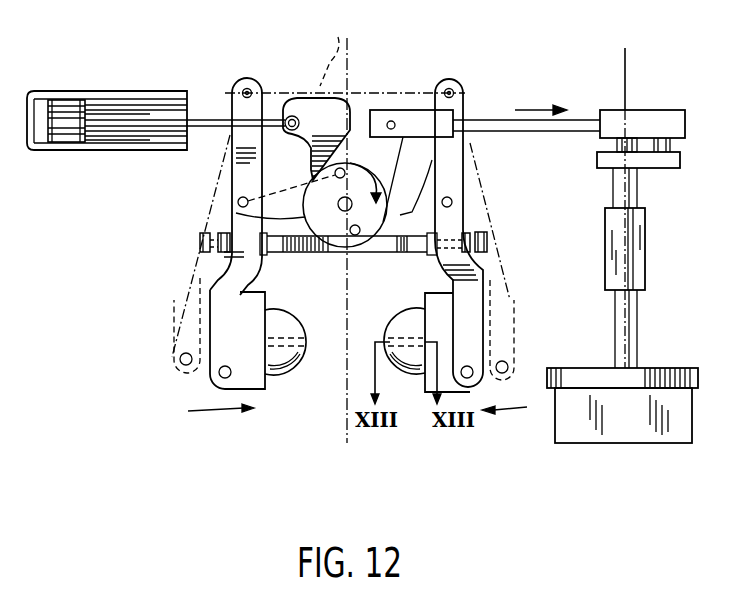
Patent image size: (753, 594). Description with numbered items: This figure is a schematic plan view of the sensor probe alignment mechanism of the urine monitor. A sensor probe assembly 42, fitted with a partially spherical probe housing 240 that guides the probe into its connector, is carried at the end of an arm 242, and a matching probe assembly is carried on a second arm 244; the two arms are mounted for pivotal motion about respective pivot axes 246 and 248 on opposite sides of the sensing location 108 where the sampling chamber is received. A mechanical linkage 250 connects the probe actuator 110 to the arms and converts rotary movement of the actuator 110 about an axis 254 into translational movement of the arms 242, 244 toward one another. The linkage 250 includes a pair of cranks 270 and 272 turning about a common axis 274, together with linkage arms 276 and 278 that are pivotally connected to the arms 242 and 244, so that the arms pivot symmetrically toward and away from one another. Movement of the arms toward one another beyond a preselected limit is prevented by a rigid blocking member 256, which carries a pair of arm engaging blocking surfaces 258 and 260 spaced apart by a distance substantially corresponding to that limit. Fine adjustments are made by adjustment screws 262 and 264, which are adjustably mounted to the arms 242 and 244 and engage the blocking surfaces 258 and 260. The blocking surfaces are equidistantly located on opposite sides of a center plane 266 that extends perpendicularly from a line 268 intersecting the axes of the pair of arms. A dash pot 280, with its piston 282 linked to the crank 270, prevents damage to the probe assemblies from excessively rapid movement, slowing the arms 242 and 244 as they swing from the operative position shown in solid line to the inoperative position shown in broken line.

The dash pot 280 is at (110, 105).
The piston 282 is at (63, 137).
The pivot axis 246 is at (243, 86).
The crank 270 is at (312, 110).
The line 268 is at (329, 50).
The crank 272 is at (310, 180).
The pivot axis 248 is at (449, 80).
The axis 254 is at (625, 60).
The linkage arm 276 is at (292, 188).
The common axis 274 is at (236, 213).
The blocking surface 258 is at (236, 221).
The adjustment screw 262 is at (200, 241).
The adjustment screw 264 is at (488, 238).
The rigid blocking member 256 is at (385, 248).
The blocking surface 260 is at (428, 226).
The linkage arm 278 is at (483, 147).
The mechanical linkage 250 is at (581, 208).
The center plane 266 is at (352, 432).
The sensing location 108 is at (330, 370).
The probe housing 240 is at (318, 297).
The sensor probe assembly 42 is at (289, 371).
The arm 242 is at (210, 332).
The arm 244 is at (477, 322).
The probe actuator 110 is at (598, 432).